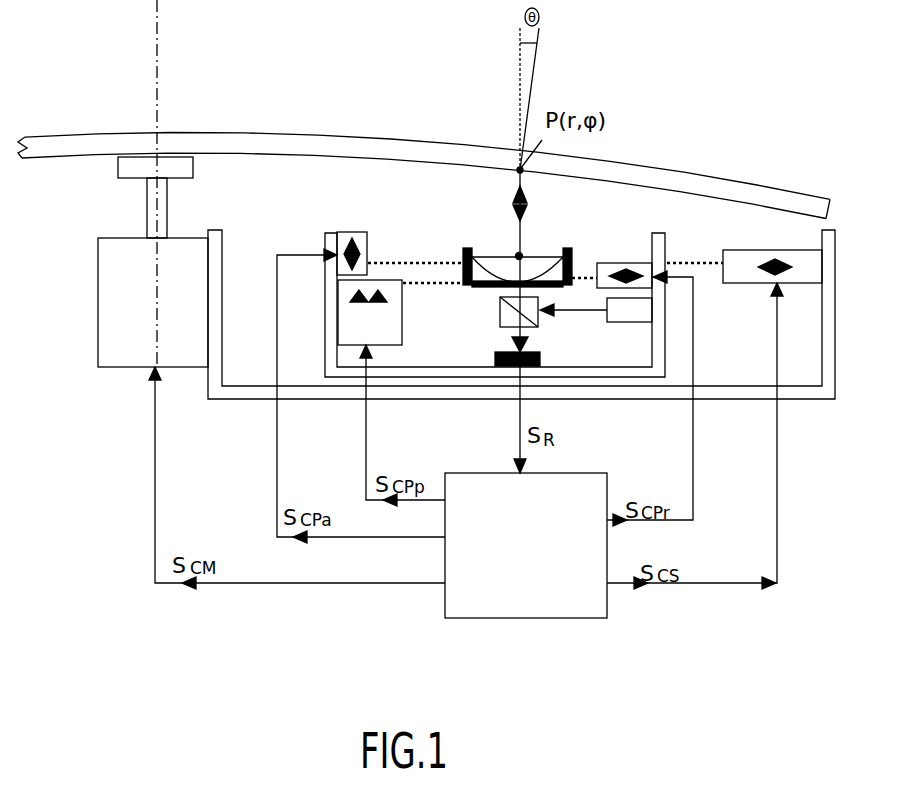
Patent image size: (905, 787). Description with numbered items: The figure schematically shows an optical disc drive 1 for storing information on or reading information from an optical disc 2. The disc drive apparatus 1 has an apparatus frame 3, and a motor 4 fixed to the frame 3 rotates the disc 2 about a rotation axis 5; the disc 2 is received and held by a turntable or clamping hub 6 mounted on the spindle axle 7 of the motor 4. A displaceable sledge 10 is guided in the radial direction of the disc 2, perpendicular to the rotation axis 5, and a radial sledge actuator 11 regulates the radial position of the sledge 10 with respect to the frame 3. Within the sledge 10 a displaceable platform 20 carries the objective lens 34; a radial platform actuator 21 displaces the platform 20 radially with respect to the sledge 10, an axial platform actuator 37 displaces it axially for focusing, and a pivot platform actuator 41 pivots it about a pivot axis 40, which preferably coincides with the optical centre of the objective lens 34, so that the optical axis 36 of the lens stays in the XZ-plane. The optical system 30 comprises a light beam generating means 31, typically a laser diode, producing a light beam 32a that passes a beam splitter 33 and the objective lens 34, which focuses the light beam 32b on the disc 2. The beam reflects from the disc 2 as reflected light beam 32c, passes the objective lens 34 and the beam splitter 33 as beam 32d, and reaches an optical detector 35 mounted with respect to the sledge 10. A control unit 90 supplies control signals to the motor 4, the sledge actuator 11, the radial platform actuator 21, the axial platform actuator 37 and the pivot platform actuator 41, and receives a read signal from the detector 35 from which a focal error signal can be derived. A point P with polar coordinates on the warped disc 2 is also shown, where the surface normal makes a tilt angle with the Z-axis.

The optical disc drive 1 is at (100, 628).
The optical disc 2 is at (273, 133).
The apparatus frame 3 is at (232, 400).
The motor 4 is at (98, 313).
The rotation axis 5 is at (157, 30).
The turntable or clamping hub 6 is at (118, 165).
The spindle axle 7 is at (147, 220).
The displaceable sledge 10 is at (323, 240).
The radial sledge actuator 11 is at (752, 250).
The displaceable platform 20 is at (477, 288).
The radial platform actuator 21 is at (622, 263).
The optical system 30 is at (625, 215).
The light beam generating means 31 is at (620, 322).
The light beam 32a is at (573, 321).
The focused light beam 32b is at (541, 194).
The reflected light beam 32c is at (540, 212).
The beam toward detector 32d is at (540, 343).
The beam splitter 33 is at (498, 322).
The objective lens 34 is at (490, 257).
The optical detector 35 is at (497, 358).
The optical axis 36 is at (518, 235).
The axial platform actuator 37 is at (357, 230).
The pivot axis 40 is at (521, 254).
The pivot platform actuator 41 is at (358, 337).
The control unit 90 is at (543, 596).